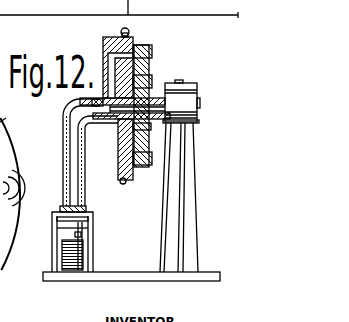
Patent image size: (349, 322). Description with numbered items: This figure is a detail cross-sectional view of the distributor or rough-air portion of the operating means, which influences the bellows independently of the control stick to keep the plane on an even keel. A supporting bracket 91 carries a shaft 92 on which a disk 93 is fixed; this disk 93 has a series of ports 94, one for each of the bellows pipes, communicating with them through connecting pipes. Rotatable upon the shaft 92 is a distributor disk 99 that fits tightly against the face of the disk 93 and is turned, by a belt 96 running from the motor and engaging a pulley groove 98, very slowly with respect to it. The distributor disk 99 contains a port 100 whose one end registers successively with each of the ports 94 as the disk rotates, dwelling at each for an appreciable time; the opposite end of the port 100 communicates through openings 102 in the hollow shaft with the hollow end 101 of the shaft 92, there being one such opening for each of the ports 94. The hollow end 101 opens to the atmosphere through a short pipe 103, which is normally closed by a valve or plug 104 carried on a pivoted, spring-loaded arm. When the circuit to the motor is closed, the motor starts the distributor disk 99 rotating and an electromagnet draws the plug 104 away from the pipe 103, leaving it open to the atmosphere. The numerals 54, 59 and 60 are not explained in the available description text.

The wheel 54 is at (8, 179).
The wheel rim 59 is at (6, 118).
The solenoid bracket 60 is at (0, 249).
The supporting bracket 91 is at (187, 197).
The shaft 92 is at (176, 100).
The disk 93 is at (152, 76).
The ports 94 is at (152, 57).
The belt 96 is at (121, 32).
The pulley groove 98 is at (137, 44).
The distributor disk 99 is at (122, 140).
The port 100 is at (104, 51).
The hollow end 101 is at (78, 104).
The openings 102 is at (157, 128).
The short pipe 103 is at (82, 171).
The valve or plug 104 is at (86, 211).